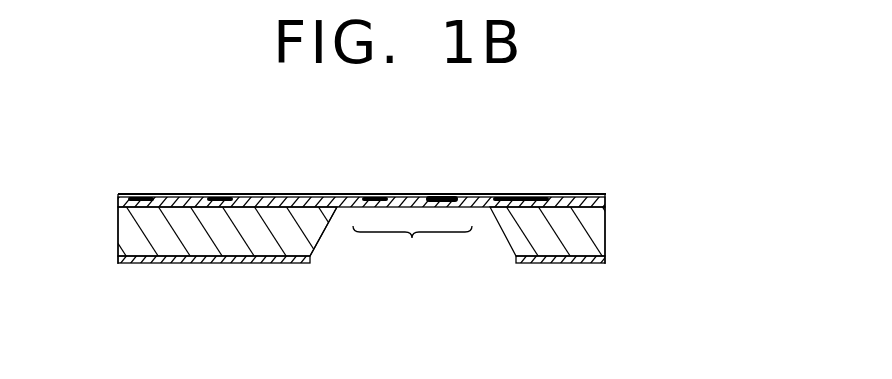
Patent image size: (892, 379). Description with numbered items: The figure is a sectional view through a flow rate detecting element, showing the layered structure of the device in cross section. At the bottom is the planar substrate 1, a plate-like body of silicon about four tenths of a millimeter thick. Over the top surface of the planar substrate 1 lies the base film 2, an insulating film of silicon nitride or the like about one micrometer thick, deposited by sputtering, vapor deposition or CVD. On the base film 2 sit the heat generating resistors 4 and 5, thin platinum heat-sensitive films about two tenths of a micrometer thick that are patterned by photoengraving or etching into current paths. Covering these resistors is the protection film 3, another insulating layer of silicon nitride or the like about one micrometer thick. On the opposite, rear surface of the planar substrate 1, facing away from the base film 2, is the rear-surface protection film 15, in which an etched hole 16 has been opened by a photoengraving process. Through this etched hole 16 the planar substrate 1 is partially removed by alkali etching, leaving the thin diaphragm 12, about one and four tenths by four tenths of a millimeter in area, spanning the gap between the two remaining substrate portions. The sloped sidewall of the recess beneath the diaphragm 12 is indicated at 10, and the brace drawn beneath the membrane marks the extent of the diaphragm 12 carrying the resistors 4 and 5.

The planar substrate 1 is at (158, 240).
The base film 2 is at (598, 195).
The protection film 3 is at (563, 195).
The heat generating resistor 4 is at (380, 197).
The heat generating resistor 5 is at (445, 197).
The opening 10 is at (335, 236).
The diaphragm 12 is at (412, 252).
The rear-surface protection film 15 is at (210, 263).
The etched hole 16 is at (485, 258).